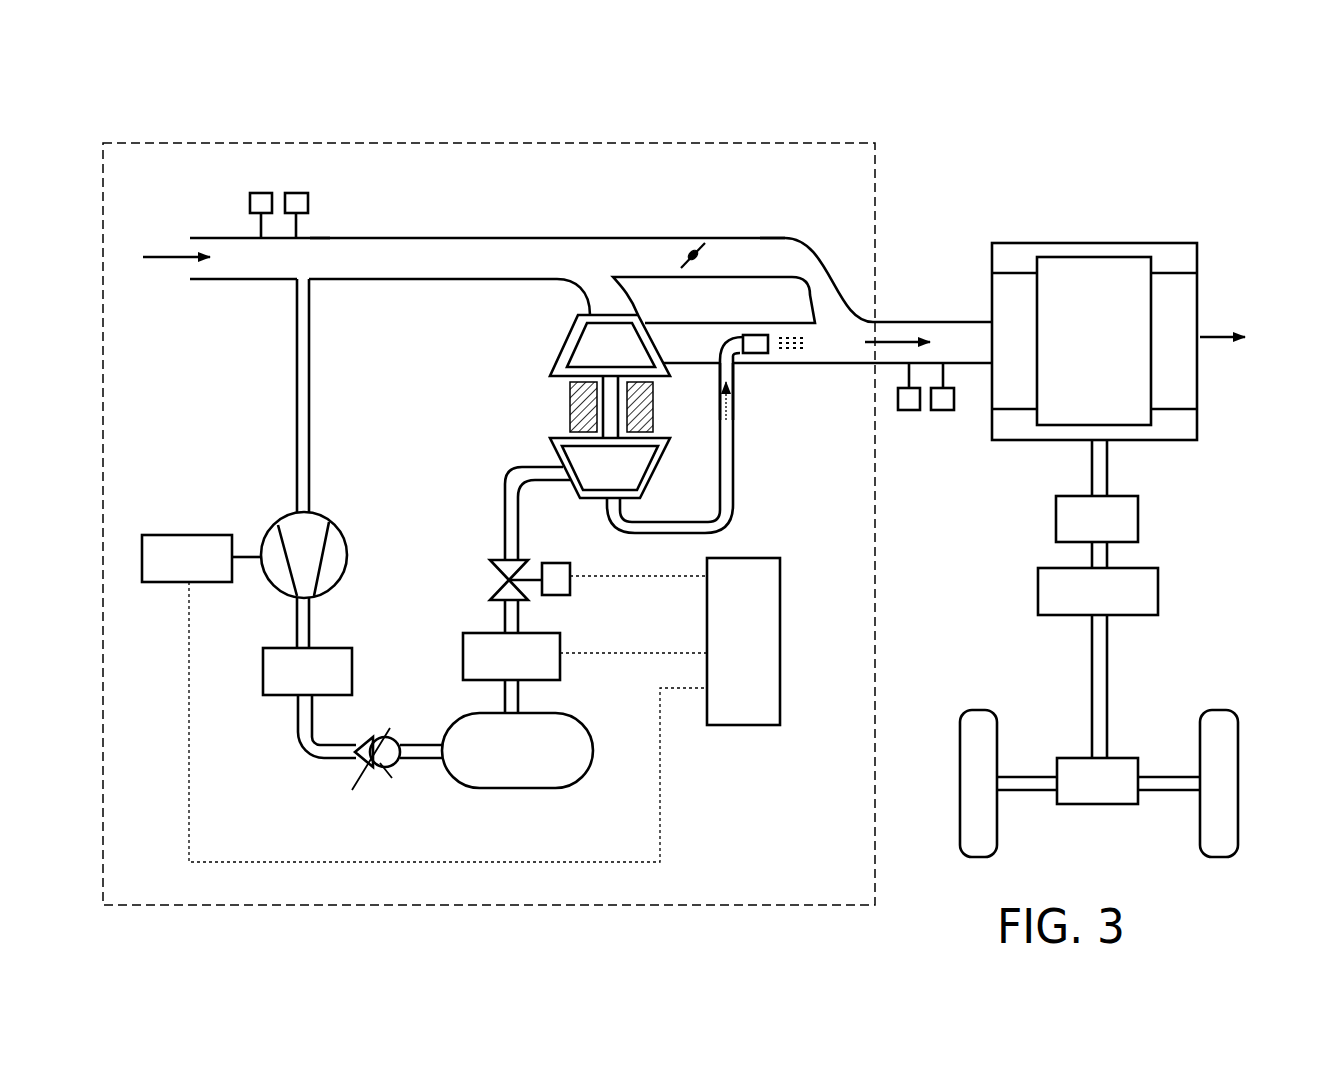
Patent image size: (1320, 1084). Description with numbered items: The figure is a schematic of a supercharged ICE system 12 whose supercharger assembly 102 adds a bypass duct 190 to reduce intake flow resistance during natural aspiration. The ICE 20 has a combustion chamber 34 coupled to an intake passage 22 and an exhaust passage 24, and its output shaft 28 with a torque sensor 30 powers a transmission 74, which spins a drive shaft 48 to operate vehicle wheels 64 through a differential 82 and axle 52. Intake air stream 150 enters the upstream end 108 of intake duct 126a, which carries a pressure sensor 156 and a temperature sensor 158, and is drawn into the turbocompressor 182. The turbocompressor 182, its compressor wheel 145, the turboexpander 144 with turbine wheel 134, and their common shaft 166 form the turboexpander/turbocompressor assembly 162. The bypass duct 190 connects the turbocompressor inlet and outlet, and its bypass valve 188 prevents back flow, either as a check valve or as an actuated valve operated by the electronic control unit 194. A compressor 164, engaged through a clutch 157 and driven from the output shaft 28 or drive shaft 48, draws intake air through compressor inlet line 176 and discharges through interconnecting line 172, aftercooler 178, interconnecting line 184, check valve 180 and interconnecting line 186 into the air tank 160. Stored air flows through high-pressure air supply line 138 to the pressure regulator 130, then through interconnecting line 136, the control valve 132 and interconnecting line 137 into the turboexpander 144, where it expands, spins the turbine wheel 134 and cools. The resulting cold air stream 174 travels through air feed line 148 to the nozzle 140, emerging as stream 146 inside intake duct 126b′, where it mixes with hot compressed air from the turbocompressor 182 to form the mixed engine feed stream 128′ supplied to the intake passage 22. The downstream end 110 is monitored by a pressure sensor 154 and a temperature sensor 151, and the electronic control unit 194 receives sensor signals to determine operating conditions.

The supercharged ICE system 12 is at (1181, 106).
The ICE 20 is at (1074, 240).
The intake passage 22 is at (999, 360).
The exhaust passage 24 is at (1159, 358).
The combustion chamber 34 is at (1080, 358).
The output shaft 28 is at (1107, 483).
The torque sensor 30 is at (1084, 532).
The transmission 74 is at (1085, 605).
The drive shaft 48 is at (1107, 680).
The differential 82 is at (1084, 794).
The axle 52 is at (1026, 775).
The vehicle wheels 64 is at (998, 813).
The supercharger assembly 102 is at (488, 141).
The upstream end 108 is at (242, 255).
The intake air stream 150 is at (176, 257).
The pressure sensor 156 is at (261, 193).
The temperature sensor 158 is at (298, 193).
The intake duct 126a is at (320, 240).
The bypass valve 188 is at (700, 236).
The bypass duct 190 is at (748, 237).
The stream 146 is at (795, 334).
The turbocompressor 182 is at (652, 322).
The nozzle 140 is at (755, 335).
The downstream end 110 is at (976, 340).
The mixed engine feed stream 128′ is at (905, 338).
The intake duct 126b′ is at (976, 340).
The pressure sensor 154 is at (909, 412).
The temperature sensor 151 is at (943, 412).
The turboexpander/turbocompressor assembly 162 is at (563, 333).
The compressor wheel 145 is at (562, 352).
The common shaft 166 is at (603, 412).
The turboexpander 144 is at (562, 446).
The turbine wheel 134 is at (645, 473).
The cold air stream 174 is at (728, 398).
The air feed line 148 is at (734, 442).
The compressor inlet line 176 is at (298, 470).
The compressor 164 is at (276, 526).
The clutch 157 is at (169, 571).
The interconnecting line 172 is at (310, 612).
The aftercooler 178 is at (289, 684).
The interconnecting line 184 is at (298, 735).
The check valve 180 is at (371, 762).
The interconnecting line 186 is at (424, 742).
The air tank 160 is at (488, 763).
The high-pressure air supply line 138 is at (518, 695).
The pressure regulator 130 is at (492, 670).
The interconnecting line 136 is at (518, 612).
The control valve 132 is at (505, 580).
The interconnecting line 137 is at (505, 538).
The electronic control unit 194 is at (725, 656).